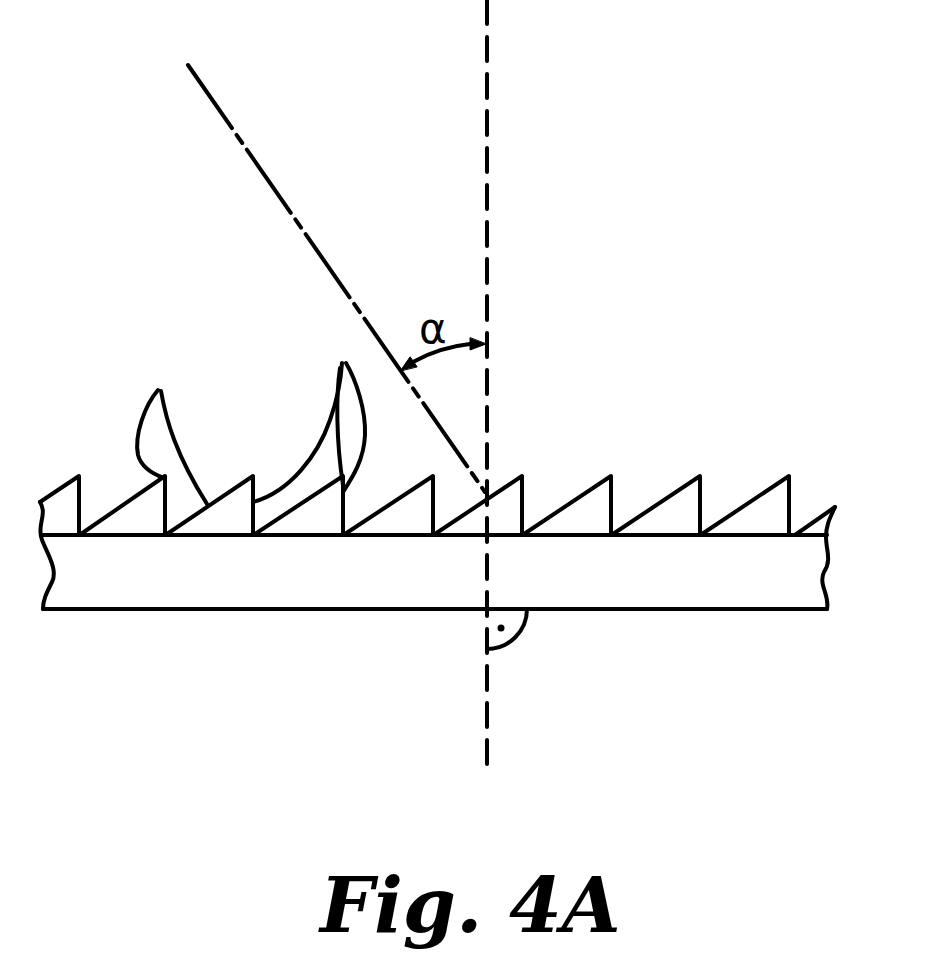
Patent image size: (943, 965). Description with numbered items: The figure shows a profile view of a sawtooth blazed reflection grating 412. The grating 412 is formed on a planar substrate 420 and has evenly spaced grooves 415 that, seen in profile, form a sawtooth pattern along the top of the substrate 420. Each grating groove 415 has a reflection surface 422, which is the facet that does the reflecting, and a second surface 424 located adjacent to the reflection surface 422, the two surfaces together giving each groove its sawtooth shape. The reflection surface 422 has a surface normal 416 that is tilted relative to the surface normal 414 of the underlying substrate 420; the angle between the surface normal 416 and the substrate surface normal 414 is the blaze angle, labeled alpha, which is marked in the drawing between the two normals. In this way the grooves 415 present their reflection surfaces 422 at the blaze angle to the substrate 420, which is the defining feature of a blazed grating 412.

The sawtooth blazed reflection grating 412 is at (446, 491).
The surface normal of the substrate 414 is at (488, 88).
The grating grooves 415 is at (573, 475).
The surface normal of the reflection surface 416 is at (257, 164).
The planar substrate 420 is at (202, 595).
The reflection surface 422 is at (172, 423).
The second surface 424 is at (309, 411).